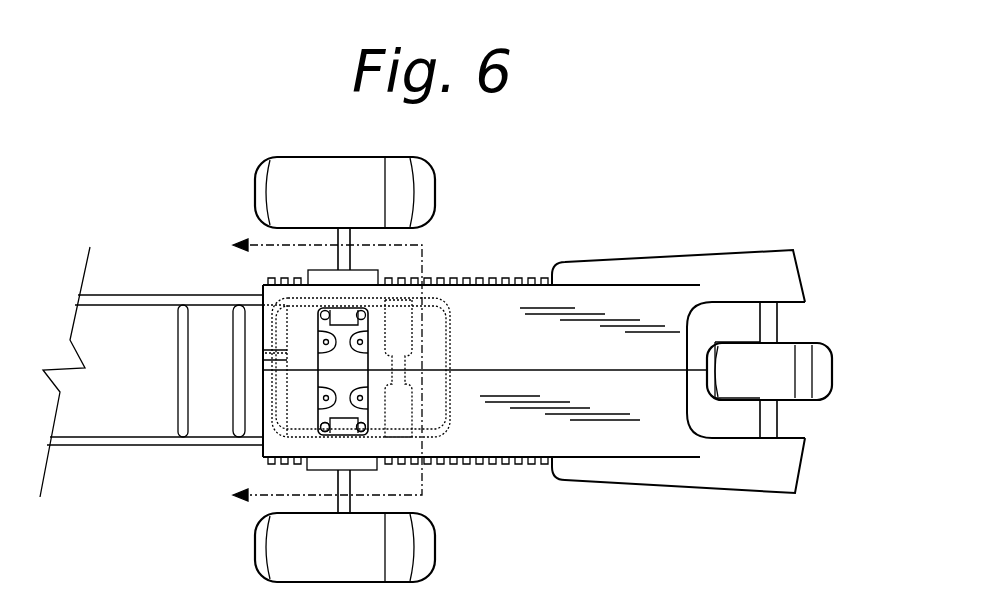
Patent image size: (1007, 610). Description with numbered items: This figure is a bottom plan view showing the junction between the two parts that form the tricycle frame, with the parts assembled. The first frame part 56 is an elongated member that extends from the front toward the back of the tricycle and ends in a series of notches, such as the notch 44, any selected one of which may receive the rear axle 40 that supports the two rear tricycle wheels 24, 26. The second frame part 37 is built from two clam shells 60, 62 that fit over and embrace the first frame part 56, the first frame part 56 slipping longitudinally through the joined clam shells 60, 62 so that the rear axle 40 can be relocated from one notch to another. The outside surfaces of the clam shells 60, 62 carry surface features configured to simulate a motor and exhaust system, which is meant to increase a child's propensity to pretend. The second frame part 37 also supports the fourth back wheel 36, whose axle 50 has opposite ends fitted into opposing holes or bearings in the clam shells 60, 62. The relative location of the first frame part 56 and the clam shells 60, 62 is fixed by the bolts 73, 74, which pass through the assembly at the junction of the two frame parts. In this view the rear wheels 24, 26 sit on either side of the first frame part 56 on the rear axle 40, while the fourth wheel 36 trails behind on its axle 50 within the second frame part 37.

The rear tricycle wheel 24 is at (437, 198).
The rear tricycle wheel 26 is at (437, 546).
The fourth back wheel 36 is at (830, 398).
The second frame part 37 is at (620, 218).
The rear axle 40 is at (425, 262).
The notch 44 is at (183, 440).
The axle 50 is at (778, 328).
The first frame part 56 is at (112, 447).
The clam shell 60 is at (528, 282).
The clam shell 62 is at (533, 462).
The bolt 73 is at (362, 315).
The bolt 74 is at (323, 425).